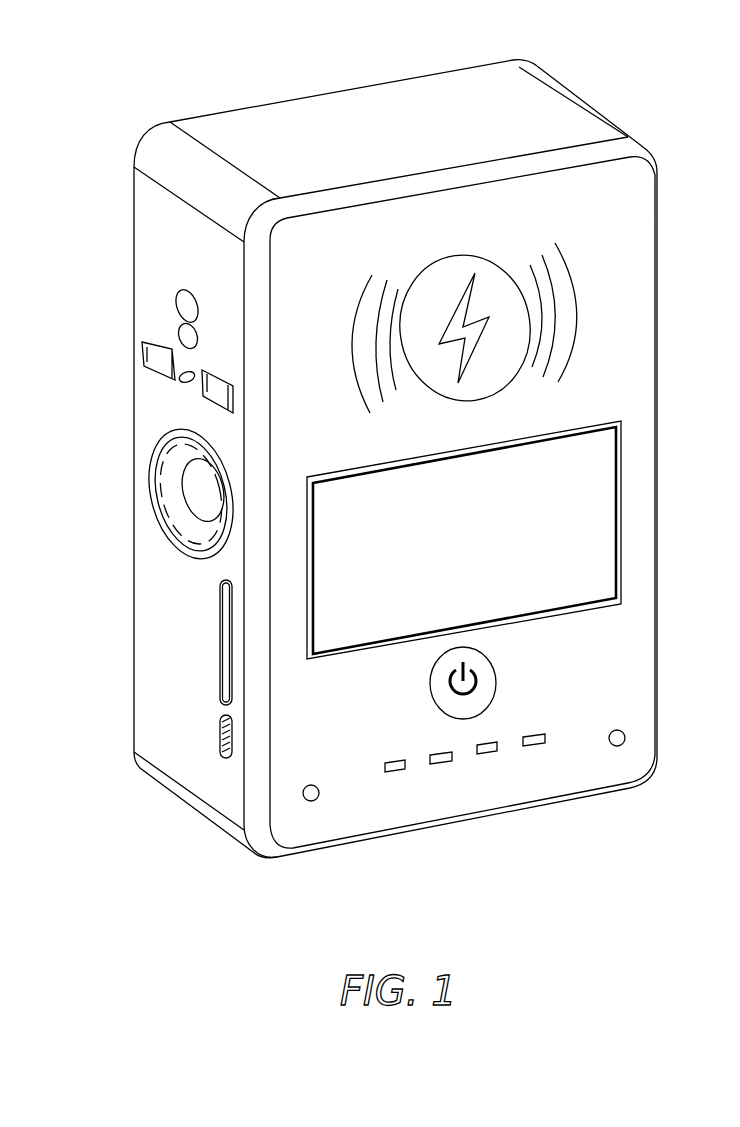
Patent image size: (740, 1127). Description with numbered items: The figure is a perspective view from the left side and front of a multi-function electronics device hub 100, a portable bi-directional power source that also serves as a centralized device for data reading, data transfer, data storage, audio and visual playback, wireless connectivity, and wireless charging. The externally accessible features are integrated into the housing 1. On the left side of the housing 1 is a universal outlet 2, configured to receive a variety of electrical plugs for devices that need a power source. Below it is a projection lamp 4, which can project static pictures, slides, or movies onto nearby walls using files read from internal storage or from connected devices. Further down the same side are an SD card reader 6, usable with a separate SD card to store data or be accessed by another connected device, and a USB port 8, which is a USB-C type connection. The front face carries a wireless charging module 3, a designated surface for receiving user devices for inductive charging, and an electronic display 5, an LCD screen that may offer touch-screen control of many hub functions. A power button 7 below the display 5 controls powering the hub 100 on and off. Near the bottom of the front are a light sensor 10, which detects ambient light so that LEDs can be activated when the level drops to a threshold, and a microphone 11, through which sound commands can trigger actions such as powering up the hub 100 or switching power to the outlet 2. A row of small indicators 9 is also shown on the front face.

The multi-function electronics device hub 100 is at (611, 64).
The housing 1 is at (633, 203).
The universal outlet 2 is at (142, 350).
The wireless charging module 3 is at (530, 315).
The projection lamp 4 is at (157, 470).
The electronic display 5 is at (590, 504).
The SD card reader 6 is at (220, 617).
The power button 7 is at (497, 677).
The USB port 8 is at (220, 733).
The battery level indicators 9 is at (440, 762).
The light sensor 10 is at (311, 801).
The microphone 11 is at (617, 746).